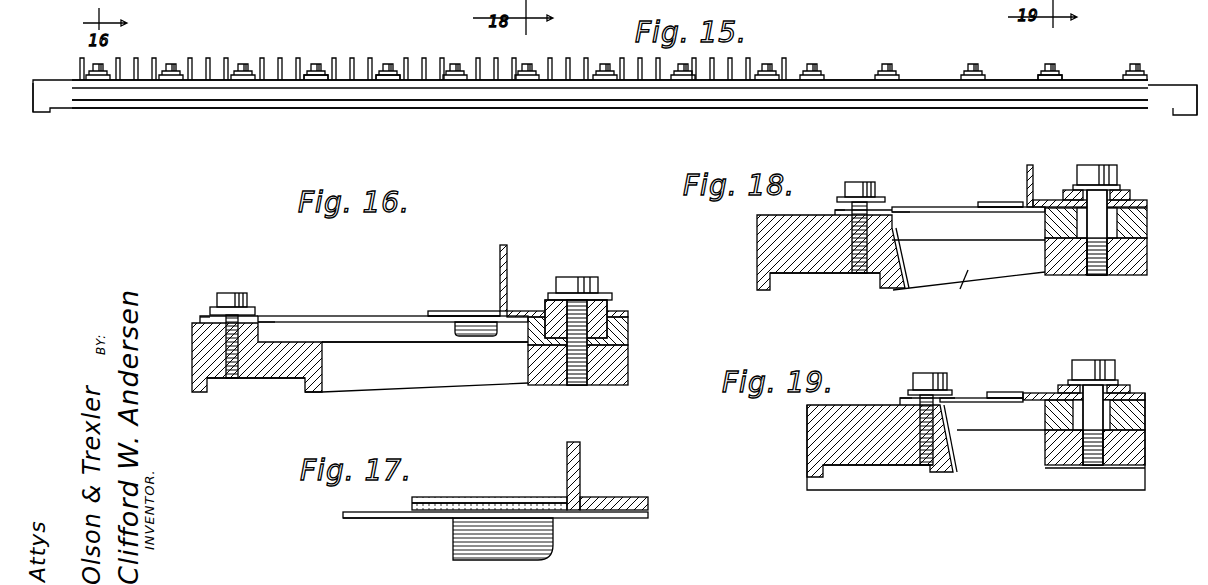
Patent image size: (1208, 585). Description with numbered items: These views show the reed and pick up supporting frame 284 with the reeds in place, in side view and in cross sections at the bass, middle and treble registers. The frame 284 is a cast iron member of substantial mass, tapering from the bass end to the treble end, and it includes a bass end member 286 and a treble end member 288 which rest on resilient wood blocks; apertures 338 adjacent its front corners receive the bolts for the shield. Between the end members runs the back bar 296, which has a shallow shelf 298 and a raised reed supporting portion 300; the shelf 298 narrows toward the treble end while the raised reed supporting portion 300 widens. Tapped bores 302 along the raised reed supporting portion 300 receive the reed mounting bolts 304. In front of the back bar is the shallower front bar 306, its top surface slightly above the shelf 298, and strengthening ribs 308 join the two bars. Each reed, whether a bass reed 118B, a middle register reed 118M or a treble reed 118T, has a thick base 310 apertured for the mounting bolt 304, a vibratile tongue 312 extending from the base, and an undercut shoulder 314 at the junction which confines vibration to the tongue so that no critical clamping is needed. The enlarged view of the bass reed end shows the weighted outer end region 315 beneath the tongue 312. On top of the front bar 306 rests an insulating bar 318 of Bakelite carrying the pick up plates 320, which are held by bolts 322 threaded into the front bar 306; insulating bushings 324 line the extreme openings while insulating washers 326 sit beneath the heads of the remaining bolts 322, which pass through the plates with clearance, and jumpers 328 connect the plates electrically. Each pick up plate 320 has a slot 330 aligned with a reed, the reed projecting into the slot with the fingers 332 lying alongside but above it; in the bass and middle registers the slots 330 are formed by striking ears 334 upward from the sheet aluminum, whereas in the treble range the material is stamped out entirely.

In FIG. 16, the bass reed 118B is at (377, 316).
In FIG. 17, the bass reed 118B is at (368, 518).
In FIG. 18, the middle register reed 118M is at (948, 207).
In FIG. 19, the treble reed 118T is at (985, 398).
In FIG. 15, the reed and pick up supporting frame 284 is at (485, 112).
In FIG. 16, the reed and pick up supporting frame 284 is at (265, 384).
In FIG. 18, the reed and pick up supporting frame 284 is at (850, 276).
In FIG. 19, the reed and pick up supporting frame 284 is at (868, 492).
In FIG. 15, the bass end member 286 is at (58, 112).
In FIG. 15, the treble end member 288 is at (1183, 88).
In FIG. 19, the treble end member 288 is at (1032, 490).
In FIG. 16, the back bar 296 is at (200, 355).
In FIG. 18, the back bar 296 is at (775, 243).
In FIG. 19, the back bar 296 is at (820, 440).
In FIG. 16, the shelf 298 is at (350, 342).
In FIG. 18, the shelf 298 is at (905, 250).
In FIG. 16, the raised reed supporting portion 300 is at (200, 320).
In FIG. 18, the raised reed supporting portion 300 is at (787, 213).
In FIG. 19, the raised reed supporting portion 300 is at (870, 385).
In FIG. 16, the tapped bore 302 is at (230, 383).
In FIG. 18, the tapped bore 302 is at (860, 275).
In FIG. 19, the tapped bore 302 is at (930, 467).
In FIG. 16, the reed mounting bolt 304 is at (242, 293).
In FIG. 18, the reed mounting bolt 304 is at (868, 184).
In FIG. 19, the reed mounting bolt 304 is at (936, 373).
In FIG. 15, the front bar 306 is at (676, 100).
In FIG. 16, the front bar 306 is at (628, 361).
In FIG. 18, the front bar 306 is at (1140, 265).
In FIG. 19, the front bar 306 is at (1140, 450).
In FIG. 18, the strengthening rib 308 is at (946, 294).
In FIG. 16, the reed base 310 is at (207, 317).
In FIG. 18, the reed base 310 is at (838, 210).
In FIG. 19, the reed base 310 is at (906, 398).
In FIG. 16, the vibratile tongue 312 is at (425, 367).
In FIG. 17, the vibratile tongue 312 is at (437, 518).
In FIG. 18, the vibratile tongue 312 is at (968, 252).
In FIG. 19, the vibratile tongue 312 is at (998, 405).
In FIG. 16, the undercut shoulder 314 is at (262, 322).
In FIG. 18, the undercut shoulder 314 is at (903, 212).
In FIG. 19, the undercut shoulder 314 is at (957, 412).
In FIG. 16, the component body 315 is at (476, 336).
In FIG. 17, the component body 315 is at (545, 545).
In FIG. 16, the insulating bar 318 is at (628, 328).
In FIG. 18, the insulating bar 318 is at (1140, 230).
In FIG. 19, the insulating bar 318 is at (1120, 415).
In FIG. 15, the pick up plate 320 is at (208, 2).
In FIG. 16, the pick up plate 320 is at (625, 311).
In FIG. 17, the pick up plate 320 is at (628, 497).
In FIG. 18, the pick up plate 320 is at (1140, 200).
In FIG. 19, the pick up plate 320 is at (1140, 393).
In FIG. 15, the bolt 322 is at (270, 0).
In FIG. 16, the bolt 322 is at (598, 291).
In FIG. 18, the bolt 322 is at (1103, 165).
In FIG. 19, the bolt 322 is at (1105, 360).
In FIG. 16, the insulating bushing 324 is at (548, 300).
In FIG. 18, the insulating washer 326 is at (1068, 190).
In FIG. 19, the insulating washer 326 is at (1068, 385).
In FIG. 15, the jumper 328 is at (420, 3).
In FIG. 16, the slot 330 is at (446, 311).
In FIG. 17, the slot 330 is at (510, 497).
In FIG. 18, the slot 330 is at (1010, 205).
In FIG. 19, the slot 330 is at (1018, 395).
In FIG. 15, the finger 332 is at (383, 84).
In FIG. 16, the finger 332 is at (430, 311).
In FIG. 17, the finger 332 is at (462, 497).
In FIG. 18, the finger 332 is at (996, 202).
In FIG. 19, the finger 332 is at (1003, 392).
In FIG. 15, the upstruck finger or ear 334 is at (358, 0).
In FIG. 16, the upstruck finger or ear 334 is at (504, 245).
In FIG. 17, the upstruck finger or ear 334 is at (580, 452).
In FIG. 18, the upstruck finger or ear 334 is at (1031, 165).
In FIG. 15, the aperture 338 is at (45, 3).